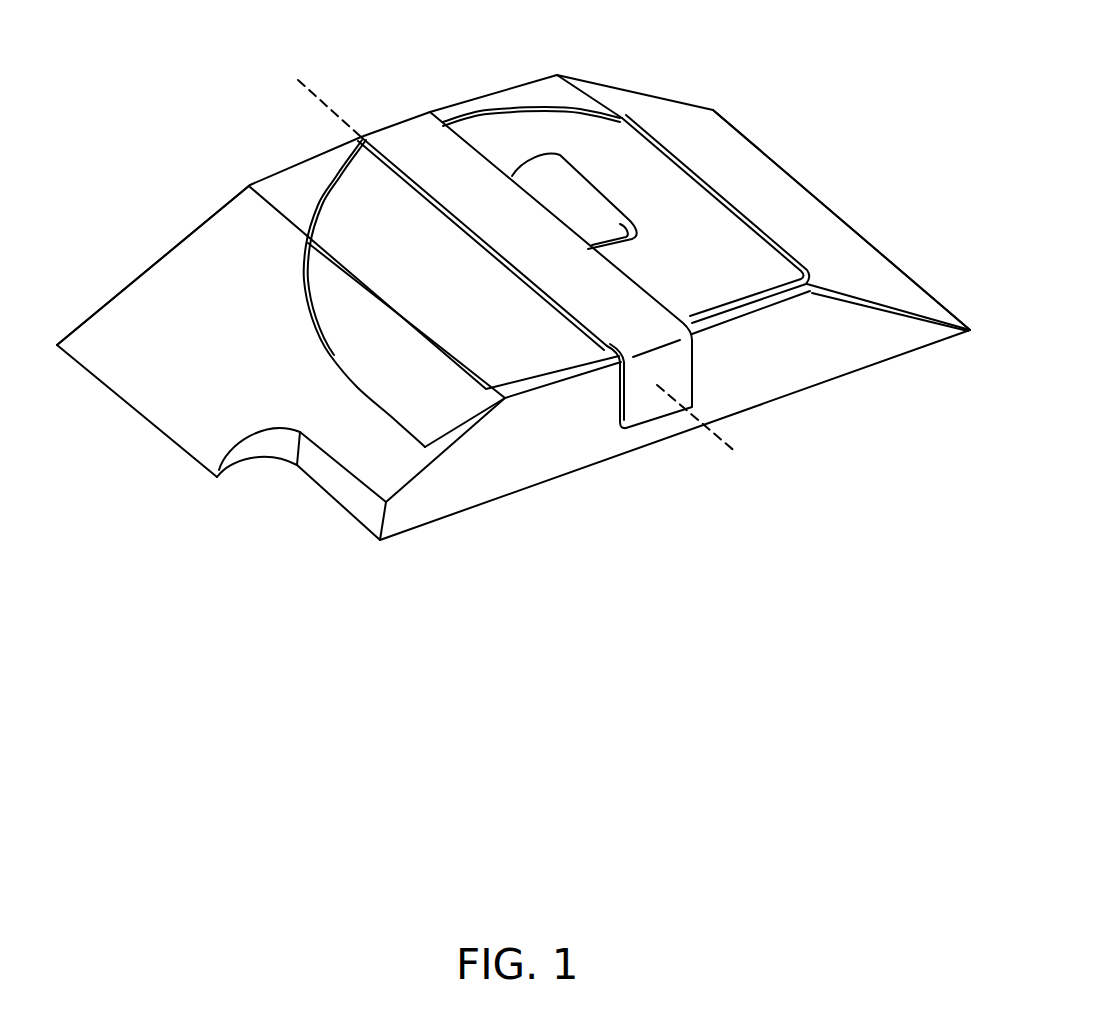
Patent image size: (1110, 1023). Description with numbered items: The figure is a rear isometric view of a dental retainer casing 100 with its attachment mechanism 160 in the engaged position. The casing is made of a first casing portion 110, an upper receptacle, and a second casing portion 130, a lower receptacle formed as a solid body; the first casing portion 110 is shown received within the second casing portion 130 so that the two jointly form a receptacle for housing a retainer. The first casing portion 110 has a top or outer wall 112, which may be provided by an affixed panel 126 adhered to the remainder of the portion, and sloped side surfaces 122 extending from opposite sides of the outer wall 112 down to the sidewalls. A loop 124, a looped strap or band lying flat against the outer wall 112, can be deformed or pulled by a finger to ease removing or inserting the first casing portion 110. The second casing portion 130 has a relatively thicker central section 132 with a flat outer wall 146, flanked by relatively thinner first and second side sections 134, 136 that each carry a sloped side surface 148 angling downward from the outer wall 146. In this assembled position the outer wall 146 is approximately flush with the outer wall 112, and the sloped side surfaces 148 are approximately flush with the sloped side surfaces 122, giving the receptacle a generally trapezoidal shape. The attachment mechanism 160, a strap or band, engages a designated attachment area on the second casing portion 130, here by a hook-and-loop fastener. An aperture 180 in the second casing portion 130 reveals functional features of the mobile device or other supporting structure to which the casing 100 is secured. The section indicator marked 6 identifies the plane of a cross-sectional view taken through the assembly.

The dental retainer casing 100 is at (752, 43).
The first casing portion 110 is at (360, 208).
The outer wall 112 is at (698, 230).
The sloped side surfaces 122 is at (803, 258).
The loop 124 is at (580, 193).
The affixed panel 126 is at (757, 293).
The second casing portion 130 is at (227, 232).
The central section 132 is at (590, 433).
The first side section 134 is at (465, 482).
The second side section 136 is at (880, 337).
The outer wall 146 is at (528, 97).
The sloped side surface 148 is at (188, 278).
The attachment mechanism 160 is at (405, 142).
The aperture 180 is at (265, 488).
The section line 6 is at (298, 80).